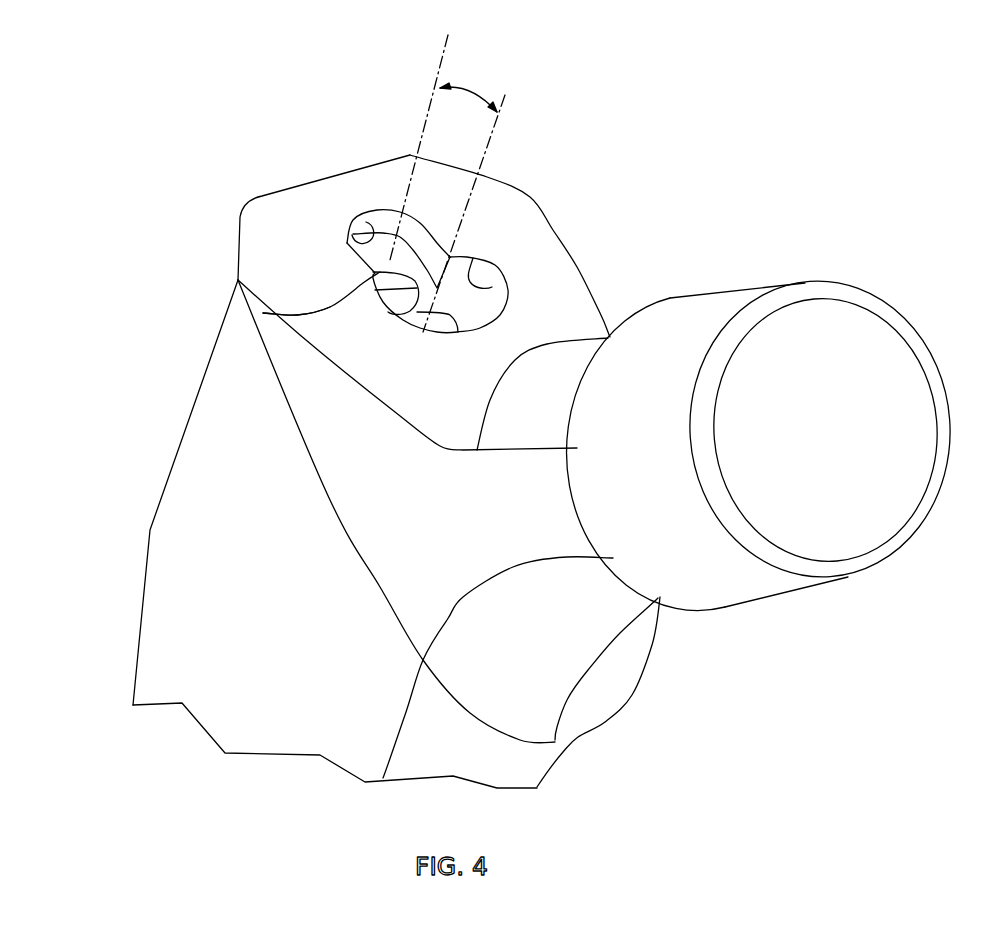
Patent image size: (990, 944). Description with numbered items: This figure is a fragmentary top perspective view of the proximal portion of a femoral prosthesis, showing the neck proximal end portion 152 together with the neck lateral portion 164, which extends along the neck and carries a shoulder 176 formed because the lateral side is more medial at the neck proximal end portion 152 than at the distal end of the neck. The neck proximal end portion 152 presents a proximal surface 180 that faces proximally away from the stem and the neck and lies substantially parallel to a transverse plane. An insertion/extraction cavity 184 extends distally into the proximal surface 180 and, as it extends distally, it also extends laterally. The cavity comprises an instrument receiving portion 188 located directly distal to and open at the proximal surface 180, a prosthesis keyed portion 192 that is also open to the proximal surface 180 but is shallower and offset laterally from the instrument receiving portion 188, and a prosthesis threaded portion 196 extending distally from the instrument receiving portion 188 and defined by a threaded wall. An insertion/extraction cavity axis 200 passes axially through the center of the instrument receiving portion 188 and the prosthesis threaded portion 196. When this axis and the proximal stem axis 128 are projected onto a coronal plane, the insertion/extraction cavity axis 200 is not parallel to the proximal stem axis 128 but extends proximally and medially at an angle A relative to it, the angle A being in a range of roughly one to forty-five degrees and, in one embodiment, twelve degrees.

The proximal stem axis 128 is at (430, 57).
The insertion/extraction cavity axis 200 is at (490, 150).
The angle A is at (478, 93).
The insertion/extraction cavity 184 is at (510, 207).
The instrument receiving portion 188 is at (473, 258).
The prosthesis keyed portion 192 is at (352, 248).
The proximal surface 180 is at (326, 287).
The prosthesis threaded portion 196 is at (263, 313).
The shoulder 176 is at (190, 427).
The neck lateral portion 164 is at (190, 512).
The neck proximal end portion 152 is at (592, 638).